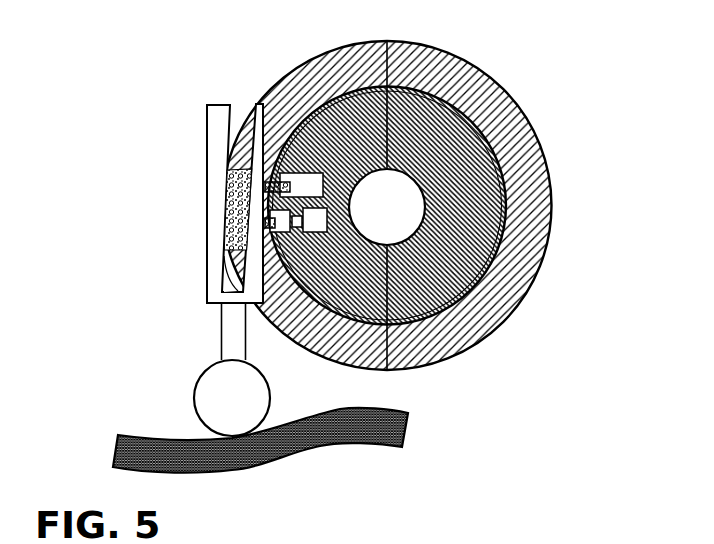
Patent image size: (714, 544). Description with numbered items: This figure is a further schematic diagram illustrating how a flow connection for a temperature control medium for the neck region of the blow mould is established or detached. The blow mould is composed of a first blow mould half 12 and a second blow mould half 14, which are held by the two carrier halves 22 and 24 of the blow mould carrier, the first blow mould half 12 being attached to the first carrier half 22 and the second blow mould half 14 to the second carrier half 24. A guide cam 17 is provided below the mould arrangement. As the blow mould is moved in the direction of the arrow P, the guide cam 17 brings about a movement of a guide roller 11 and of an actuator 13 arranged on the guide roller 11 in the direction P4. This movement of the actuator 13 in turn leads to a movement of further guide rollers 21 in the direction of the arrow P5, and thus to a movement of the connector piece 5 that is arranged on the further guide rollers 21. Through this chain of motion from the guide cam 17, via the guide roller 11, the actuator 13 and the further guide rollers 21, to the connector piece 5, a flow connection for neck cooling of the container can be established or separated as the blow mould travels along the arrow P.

The connector piece 5 is at (303, 257).
The guide roller 11 is at (198, 380).
The first blow mould half 12 is at (420, 175).
The actuator 13 is at (214, 165).
The second blow mould half 14 is at (362, 227).
The guide cam 17 is at (158, 441).
The further guide rollers 21 is at (221, 229).
The first carrier half 22 is at (549, 153).
The second carrier half 24 is at (300, 64).
The direction of movement of the blow mould P is at (147, 338).
The direction of movement of the guide roller and actuator P4 is at (78, 296).
The direction of movement of the further guide rollers P5 is at (140, 172).